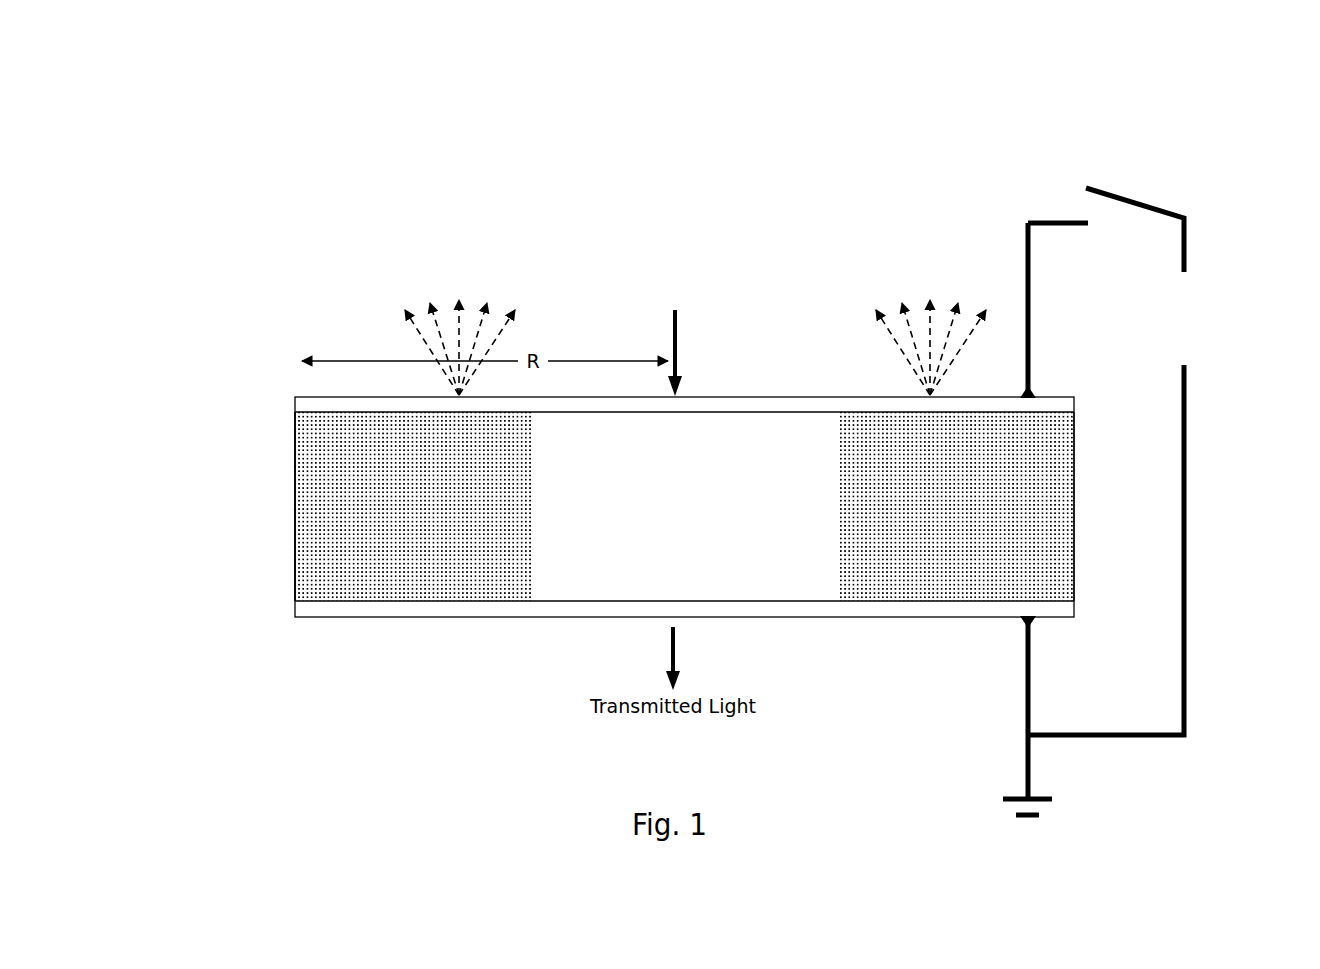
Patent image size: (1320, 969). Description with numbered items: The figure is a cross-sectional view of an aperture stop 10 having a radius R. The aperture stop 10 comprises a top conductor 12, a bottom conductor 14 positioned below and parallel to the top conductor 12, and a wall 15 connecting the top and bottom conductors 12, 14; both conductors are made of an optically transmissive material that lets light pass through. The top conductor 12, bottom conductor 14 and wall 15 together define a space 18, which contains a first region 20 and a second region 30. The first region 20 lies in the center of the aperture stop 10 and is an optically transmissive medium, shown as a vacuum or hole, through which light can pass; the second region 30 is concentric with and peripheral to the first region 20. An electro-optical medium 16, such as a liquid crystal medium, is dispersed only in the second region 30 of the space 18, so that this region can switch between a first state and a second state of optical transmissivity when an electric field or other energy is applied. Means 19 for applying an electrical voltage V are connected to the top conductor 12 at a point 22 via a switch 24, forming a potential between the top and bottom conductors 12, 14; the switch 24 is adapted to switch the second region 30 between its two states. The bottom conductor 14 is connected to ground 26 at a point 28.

The aperture stop 10 is at (862, 263).
The top conductor 12 is at (792, 397).
The bottom conductor 14 is at (870, 617).
The wall 15 is at (295, 518).
The electro-optical medium 16 is at (333, 428).
The space 18 is at (284, 440).
The means for applying electrical voltage 19 is at (1222, 228).
The first region 20 is at (662, 514).
The point 22 is at (1030, 396).
The switch 24 is at (1107, 192).
The ground 26 is at (1050, 808).
The point 28 is at (1020, 614).
The second region 30 is at (389, 514).